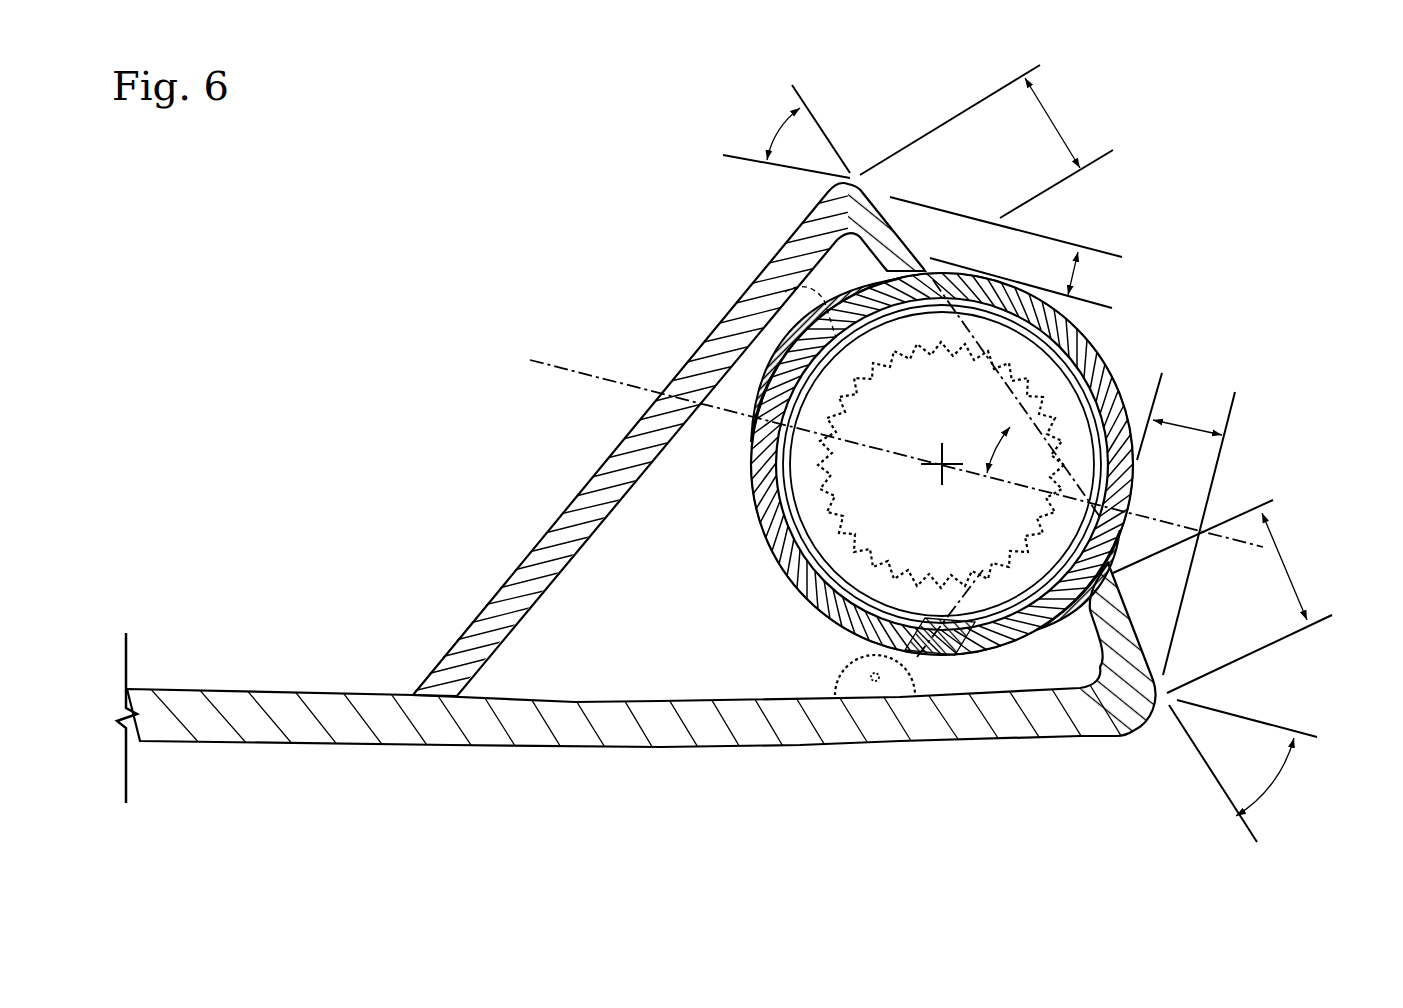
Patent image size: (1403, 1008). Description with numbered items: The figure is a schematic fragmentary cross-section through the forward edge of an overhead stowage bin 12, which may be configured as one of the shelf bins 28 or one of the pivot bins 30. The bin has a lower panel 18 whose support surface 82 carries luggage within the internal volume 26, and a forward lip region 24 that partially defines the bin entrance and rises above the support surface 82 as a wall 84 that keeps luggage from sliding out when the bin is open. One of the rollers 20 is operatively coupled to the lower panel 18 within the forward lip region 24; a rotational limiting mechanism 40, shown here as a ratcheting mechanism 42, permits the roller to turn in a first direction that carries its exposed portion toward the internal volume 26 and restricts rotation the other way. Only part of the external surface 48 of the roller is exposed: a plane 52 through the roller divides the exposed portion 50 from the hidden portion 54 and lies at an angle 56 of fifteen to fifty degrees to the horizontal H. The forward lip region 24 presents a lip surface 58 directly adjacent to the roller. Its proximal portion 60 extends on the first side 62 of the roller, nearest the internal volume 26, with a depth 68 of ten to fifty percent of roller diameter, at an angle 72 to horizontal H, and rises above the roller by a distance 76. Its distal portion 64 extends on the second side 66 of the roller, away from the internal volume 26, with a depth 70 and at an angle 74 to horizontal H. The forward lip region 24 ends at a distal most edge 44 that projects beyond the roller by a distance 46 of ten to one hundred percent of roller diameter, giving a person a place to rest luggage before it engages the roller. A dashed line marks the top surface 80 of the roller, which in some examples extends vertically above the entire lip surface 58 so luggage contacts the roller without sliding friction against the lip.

The overhead stowage bin 12 is at (1326, 210).
The lower panel 18 is at (356, 155).
The rollers 20 is at (1013, 272).
The forward lip region 24 is at (862, 127).
The internal volume 26 is at (353, 420).
The shelf bins 28 is at (1212, 182).
The pivot bins 30 is at (1242, 234).
The rotational limiting mechanism 40 is at (832, 660).
The ratcheting mechanism 42 is at (905, 660).
The distal most edge 44 is at (1156, 710).
The distance 46 is at (1188, 430).
The external surface 48 is at (1106, 368).
The exposed portion 50 is at (1123, 391).
The plane 52 is at (985, 380).
The hidden portion 54 is at (760, 536).
The angle 56 is at (1006, 454).
The lip surface 58 is at (907, 232).
The proximal portion 60 is at (881, 200).
The first side 62 is at (920, 197).
The distal portion 64 is at (1148, 662).
The second side 66 is at (1178, 643).
The depth 68 is at (1062, 138).
The depth 70 is at (1290, 572).
The angle 72 is at (774, 148).
The angle 74 is at (1275, 778).
The distance 76 is at (1076, 280).
The top surface 80 is at (948, 308).
The support surface 82 is at (213, 690).
The wall 84 is at (590, 484).
The horizontal H is at (565, 356).